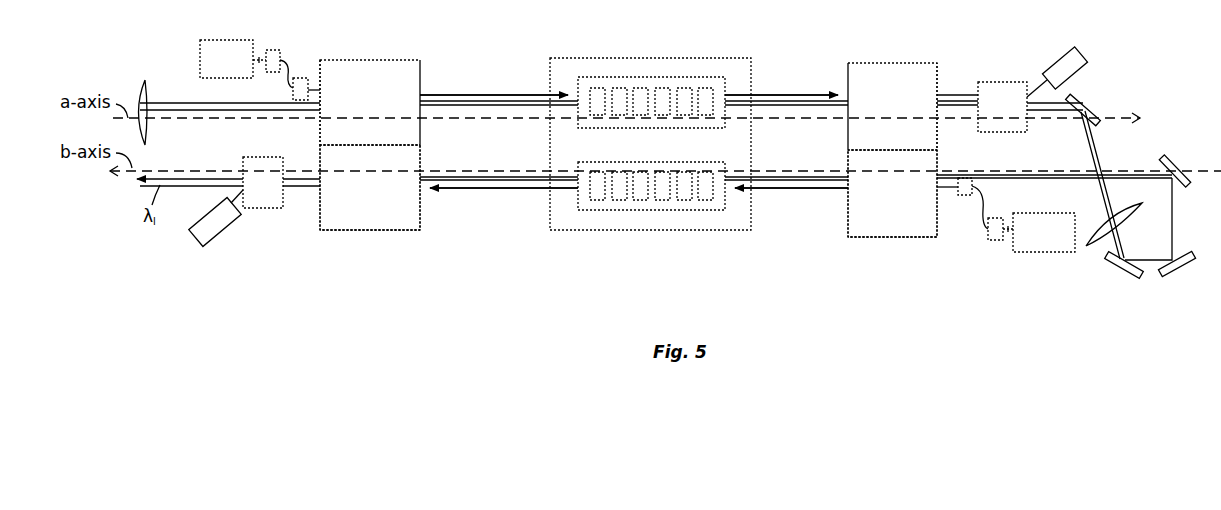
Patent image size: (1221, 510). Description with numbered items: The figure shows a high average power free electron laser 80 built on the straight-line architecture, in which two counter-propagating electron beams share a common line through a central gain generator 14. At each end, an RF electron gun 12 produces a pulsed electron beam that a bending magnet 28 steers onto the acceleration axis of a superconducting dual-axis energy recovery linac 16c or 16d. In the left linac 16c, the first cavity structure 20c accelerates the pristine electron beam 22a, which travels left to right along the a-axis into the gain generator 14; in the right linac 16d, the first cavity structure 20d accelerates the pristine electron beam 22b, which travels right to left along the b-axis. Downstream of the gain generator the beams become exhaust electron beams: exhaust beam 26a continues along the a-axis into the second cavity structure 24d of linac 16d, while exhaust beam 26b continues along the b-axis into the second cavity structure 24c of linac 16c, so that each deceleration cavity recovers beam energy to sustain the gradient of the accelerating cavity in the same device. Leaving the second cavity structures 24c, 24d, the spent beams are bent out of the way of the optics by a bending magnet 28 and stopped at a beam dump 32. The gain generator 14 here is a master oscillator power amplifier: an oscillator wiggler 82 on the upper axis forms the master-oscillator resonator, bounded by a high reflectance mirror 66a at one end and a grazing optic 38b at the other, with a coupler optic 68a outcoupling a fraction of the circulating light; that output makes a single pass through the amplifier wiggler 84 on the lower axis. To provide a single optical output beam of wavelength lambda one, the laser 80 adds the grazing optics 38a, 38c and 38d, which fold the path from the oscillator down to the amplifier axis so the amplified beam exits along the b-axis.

The RF electron gun 12 is at (637, 146).
The gain generator 14 is at (620, 58).
The superconducting dual-axis energy recovery linac 16c is at (370, 260).
The superconducting dual-axis energy recovery linac 16d is at (895, 264).
The first cavity structure 20c is at (370, 102).
The first cavity structure 20d is at (892, 193).
The pristine electron beam 22a is at (518, 95).
The pristine electron beam 22b is at (782, 190).
The second cavity structure 24c is at (370, 187).
The second cavity structure 24d is at (892, 106).
The exhaust electron beam 26a is at (787, 95).
The exhaust electron beam 26b is at (480, 190).
The bending magnet 28 is at (270, 50).
The beam dump 32 is at (226, 226).
The grazing optic 38a is at (1178, 165).
The grazing optic 38b is at (1090, 100).
The grazing optic 38c is at (1118, 274).
The grazing optic 38d is at (1179, 269).
The high reflectance mirror 66a is at (138, 92).
The coupler optic 68a is at (1137, 219).
The high average power free electron laser 80 is at (200, 290).
The oscillator wiggler 82 is at (652, 77).
The amplifier wiggler 84 is at (652, 212).